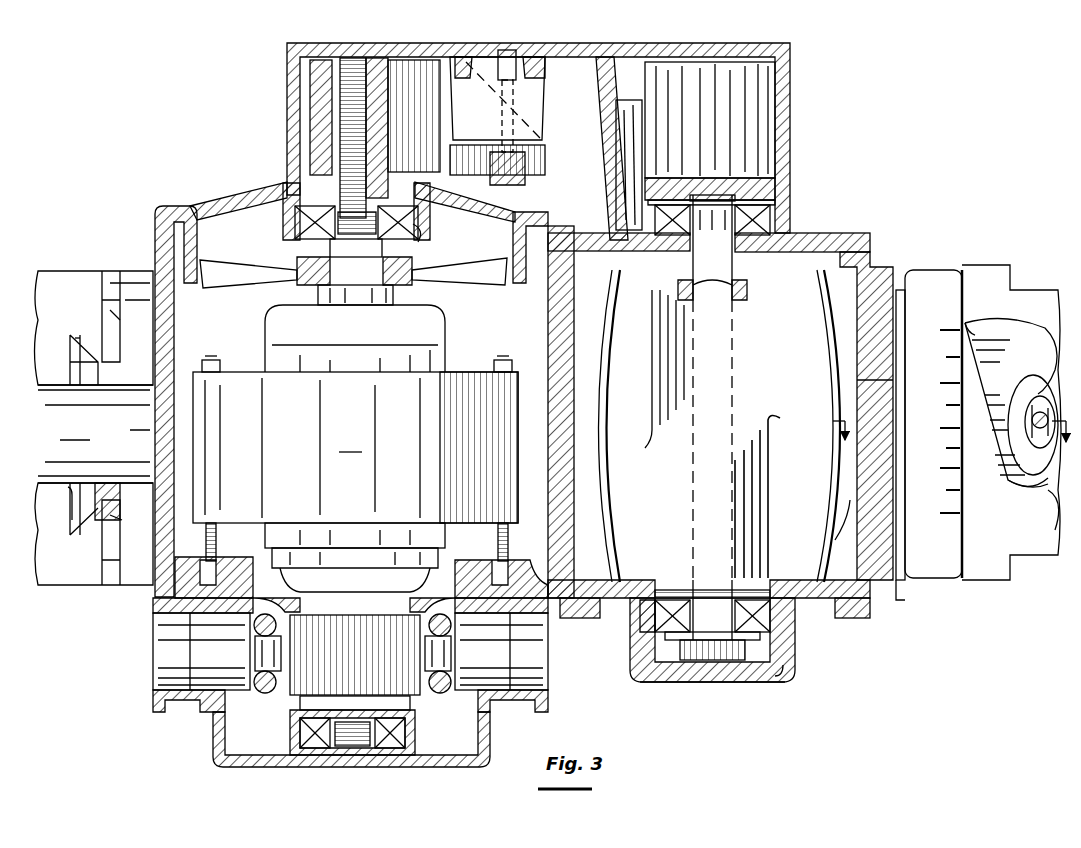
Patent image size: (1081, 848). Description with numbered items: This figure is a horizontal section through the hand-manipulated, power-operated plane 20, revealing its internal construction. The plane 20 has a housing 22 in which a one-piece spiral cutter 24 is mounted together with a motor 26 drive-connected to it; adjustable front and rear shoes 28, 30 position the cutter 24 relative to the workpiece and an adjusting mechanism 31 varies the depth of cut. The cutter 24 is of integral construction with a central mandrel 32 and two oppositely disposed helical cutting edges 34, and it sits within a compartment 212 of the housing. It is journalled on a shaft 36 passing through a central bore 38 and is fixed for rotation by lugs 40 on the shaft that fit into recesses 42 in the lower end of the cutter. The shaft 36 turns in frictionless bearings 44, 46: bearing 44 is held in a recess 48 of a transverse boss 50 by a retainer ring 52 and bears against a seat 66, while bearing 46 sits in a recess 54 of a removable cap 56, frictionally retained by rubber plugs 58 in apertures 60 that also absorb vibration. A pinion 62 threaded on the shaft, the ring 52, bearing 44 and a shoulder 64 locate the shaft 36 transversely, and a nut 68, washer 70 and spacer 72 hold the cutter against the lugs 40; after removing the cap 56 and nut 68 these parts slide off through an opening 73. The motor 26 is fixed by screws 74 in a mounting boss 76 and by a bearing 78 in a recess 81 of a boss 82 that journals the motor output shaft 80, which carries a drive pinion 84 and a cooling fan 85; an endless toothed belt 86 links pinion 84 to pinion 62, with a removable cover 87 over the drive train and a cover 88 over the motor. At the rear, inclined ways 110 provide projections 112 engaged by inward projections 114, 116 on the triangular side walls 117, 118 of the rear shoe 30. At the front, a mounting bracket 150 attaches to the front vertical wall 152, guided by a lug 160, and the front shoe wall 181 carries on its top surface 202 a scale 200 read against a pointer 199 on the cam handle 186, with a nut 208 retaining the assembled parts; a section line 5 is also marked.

The plane 20 is at (174, 118).
The housing 22 is at (156, 234).
The cutter 24 is at (588, 333).
The motor 26 is at (355, 414).
The front shoe 28 is at (1015, 268).
The rear shoe 30 is at (75, 270).
The adjusting mechanism 31 is at (1052, 500).
The mandrel 32 is at (668, 376).
The cutting edges 34 is at (831, 283).
The shaft 36 is at (700, 524).
The central bore 38 is at (694, 498).
The lugs 40 is at (700, 259).
The recesses 42 is at (733, 302).
The bearing 44 is at (790, 214).
The bearing 46 is at (772, 636).
The recess 48 is at (640, 210).
The boss 50 is at (790, 160).
The retainer ring 52 is at (775, 202).
The recess 54 is at (786, 628).
The cap 56 is at (720, 686).
The rubber plugs 58 is at (652, 606).
The apertures 60 is at (634, 638).
The pinion 62 is at (770, 138).
The shoulder 64 is at (802, 251).
The seat 66 is at (650, 252).
The nut 68 is at (780, 672).
The washer 70 is at (748, 652).
The spacer 72 is at (688, 590).
The opening 73 is at (600, 582).
The screws 74 is at (210, 360).
The mounting boss 76 is at (500, 528).
The bearing 78 is at (295, 220).
The motor output shaft 80 is at (340, 127).
The recess 81 is at (422, 225).
The boss 82 is at (295, 234).
The drive pinion 84 is at (322, 80).
The fan 85 is at (225, 282).
The toothed belt 86 is at (690, 68).
The cover 87 is at (470, 57).
The cover 88 is at (415, 768).
The ways 110 is at (118, 329).
The shoe supporting projections 112 is at (97, 357).
The projection 114 is at (80, 338).
The projection 116 is at (66, 500).
The side wall 117 is at (42, 290).
The side wall 118 is at (85, 588).
The front shoe mounting bracket 150 is at (913, 589).
The front vertical wall 152 is at (878, 490).
The lug 160 is at (906, 318).
The vertical transverse wall member 181 is at (878, 385).
The handle 186 is at (1020, 492).
The pointer 199 is at (962, 328).
The scale 200 is at (940, 548).
The top surface 202 is at (938, 272).
The nut 208 is at (1040, 400).
The compartment 212 is at (834, 530).
The section line 5 is at (952, 421).